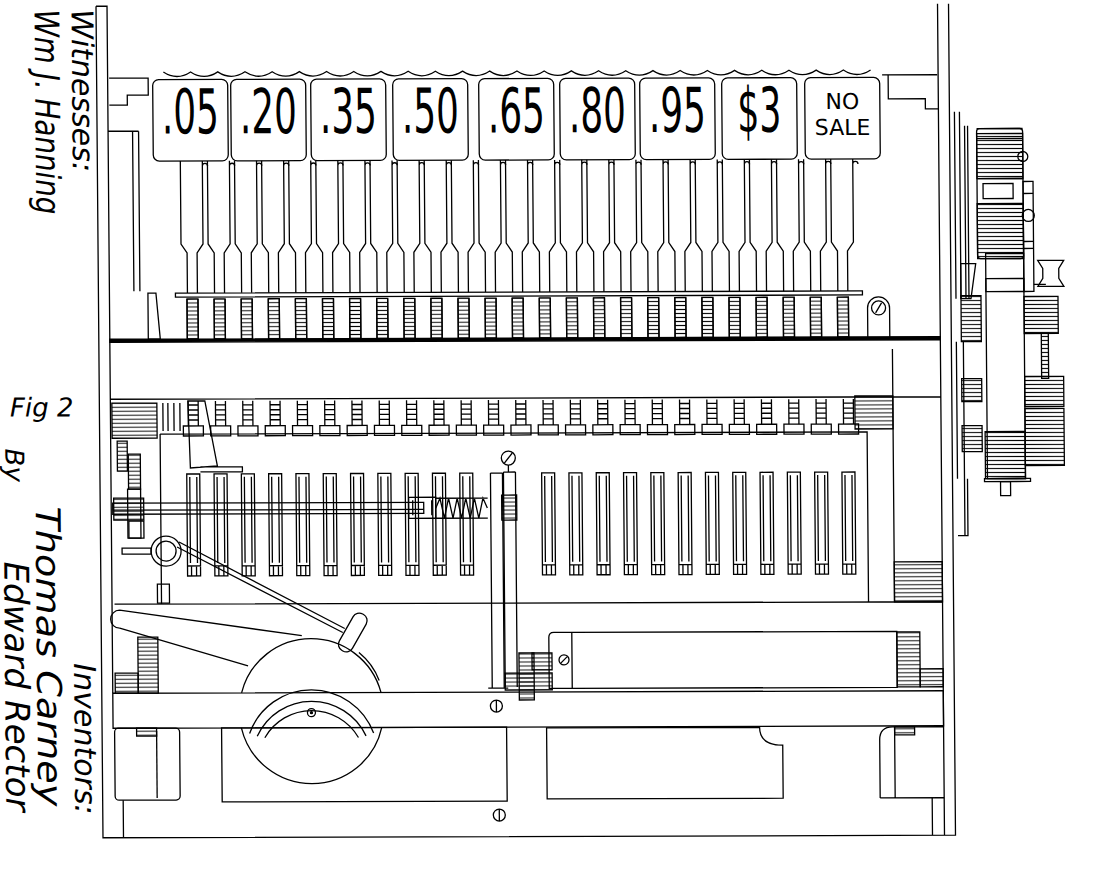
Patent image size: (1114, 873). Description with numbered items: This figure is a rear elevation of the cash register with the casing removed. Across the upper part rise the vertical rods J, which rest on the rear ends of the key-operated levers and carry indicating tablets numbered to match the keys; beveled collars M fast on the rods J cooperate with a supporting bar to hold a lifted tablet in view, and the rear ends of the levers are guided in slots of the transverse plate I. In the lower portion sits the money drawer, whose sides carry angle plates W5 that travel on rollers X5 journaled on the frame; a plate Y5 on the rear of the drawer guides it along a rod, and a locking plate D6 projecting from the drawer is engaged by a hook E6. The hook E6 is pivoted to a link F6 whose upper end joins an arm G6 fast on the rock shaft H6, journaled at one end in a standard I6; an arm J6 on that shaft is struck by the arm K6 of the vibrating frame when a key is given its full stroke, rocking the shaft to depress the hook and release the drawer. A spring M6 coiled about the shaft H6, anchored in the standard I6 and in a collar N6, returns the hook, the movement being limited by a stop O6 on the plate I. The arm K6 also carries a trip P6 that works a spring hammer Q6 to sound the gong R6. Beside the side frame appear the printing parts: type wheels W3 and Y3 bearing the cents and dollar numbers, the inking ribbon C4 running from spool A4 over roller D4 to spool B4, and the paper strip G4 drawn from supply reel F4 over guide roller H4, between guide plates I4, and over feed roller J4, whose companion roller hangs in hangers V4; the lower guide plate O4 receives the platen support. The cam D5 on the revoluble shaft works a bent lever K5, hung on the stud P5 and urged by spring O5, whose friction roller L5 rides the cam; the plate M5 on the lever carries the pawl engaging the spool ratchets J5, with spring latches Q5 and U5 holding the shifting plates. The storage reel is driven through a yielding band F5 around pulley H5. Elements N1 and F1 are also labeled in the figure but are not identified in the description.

The vertical rod J is at (182, 272).
The spring N1 is at (684, 428).
The beveled collar M is at (299, 434).
The plate I is at (521, 511).
The rock shaft H6 is at (341, 500).
The bar foot F1 is at (711, 568).
The arm K6 is at (120, 452).
The trip P6 is at (134, 487).
The forwardly projecting arm J6 is at (115, 510).
The collar N6 is at (418, 497).
The spring M6 is at (455, 497).
The stop O6 is at (514, 498).
The ear or arm G6 is at (516, 503).
The link F6 is at (516, 598).
The standard I6 is at (490, 592).
The spring hammer Q6 is at (233, 585).
The type wheel W3 is at (165, 630).
The roller X5 is at (157, 670).
The gong R6 is at (311, 696).
The locking plate D6 is at (540, 656).
The hook E6 is at (505, 692).
The plate Y5 is at (723, 659).
The angle plate W5 is at (906, 633).
The spring latch U5 is at (956, 113).
The ratchet J5 is at (967, 127).
The inking ribbon C4 is at (1023, 140).
The spring latch Q5 is at (1000, 230).
The bent lever K5 is at (967, 184).
The vertical plate M5 is at (985, 131).
The roller D4 is at (1023, 145).
The spool A4 is at (1028, 158).
The type wheel Y3 is at (1033, 190).
The hanger V4 is at (1033, 195).
The spool B4 is at (1034, 217).
The guide plate I4 is at (1034, 250).
The guide roller H4 is at (1063, 262).
The spring O5 is at (962, 278).
The stud or screw P5 is at (1005, 272).
The guide roller J4 is at (1045, 290).
The friction roller L5 is at (960, 317).
The pulley H5 is at (1057, 322).
The cam D5 is at (960, 342).
The paper strip G4 is at (1007, 379).
The yielding band F5 is at (1047, 360).
The supply reel F4 is at (1023, 472).
The lower guide plate O4 is at (1003, 497).